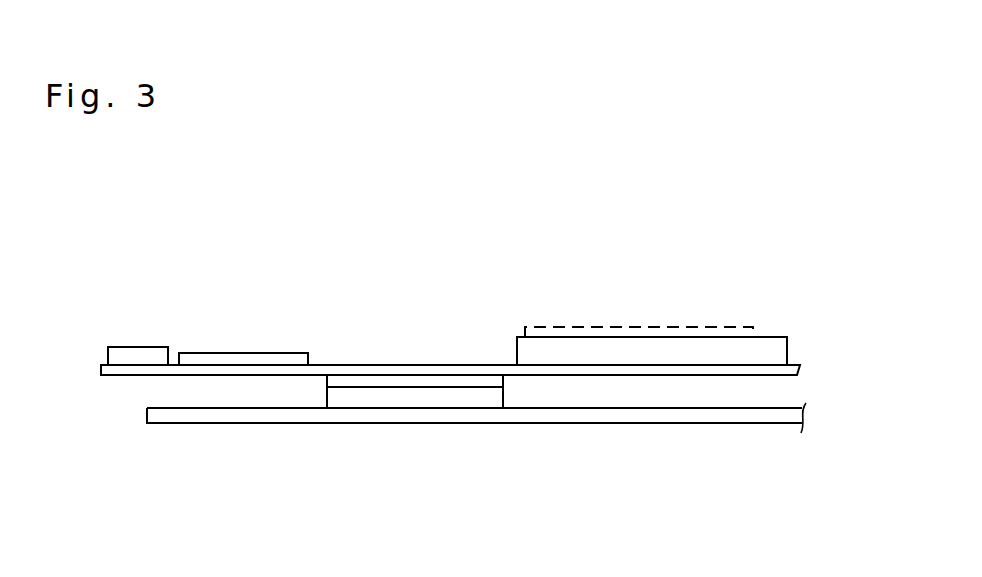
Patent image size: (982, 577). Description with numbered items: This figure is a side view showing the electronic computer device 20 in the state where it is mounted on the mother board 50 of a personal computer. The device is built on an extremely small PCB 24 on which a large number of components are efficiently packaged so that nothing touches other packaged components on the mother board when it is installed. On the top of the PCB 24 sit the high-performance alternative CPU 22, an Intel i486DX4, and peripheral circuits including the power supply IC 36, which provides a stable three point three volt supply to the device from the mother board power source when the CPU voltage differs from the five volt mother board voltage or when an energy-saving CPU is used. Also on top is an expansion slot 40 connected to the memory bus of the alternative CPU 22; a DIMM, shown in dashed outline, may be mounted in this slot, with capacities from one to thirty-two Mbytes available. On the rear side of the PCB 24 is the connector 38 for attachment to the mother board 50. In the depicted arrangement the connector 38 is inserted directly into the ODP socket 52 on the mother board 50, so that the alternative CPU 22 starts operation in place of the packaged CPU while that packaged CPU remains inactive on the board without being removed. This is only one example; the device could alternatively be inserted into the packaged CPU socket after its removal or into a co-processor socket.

The electronic computer device 20 is at (450, 327).
The alternative CPU 22 is at (233, 353).
The PCB 24 is at (795, 372).
The power supply IC 36 is at (135, 347).
The connector 38 is at (503, 377).
The expansion slot 40 is at (778, 352).
The dual in-line memory module DIMM is at (676, 327).
The mother board 50 is at (213, 423).
The ODP socket 52 is at (423, 403).